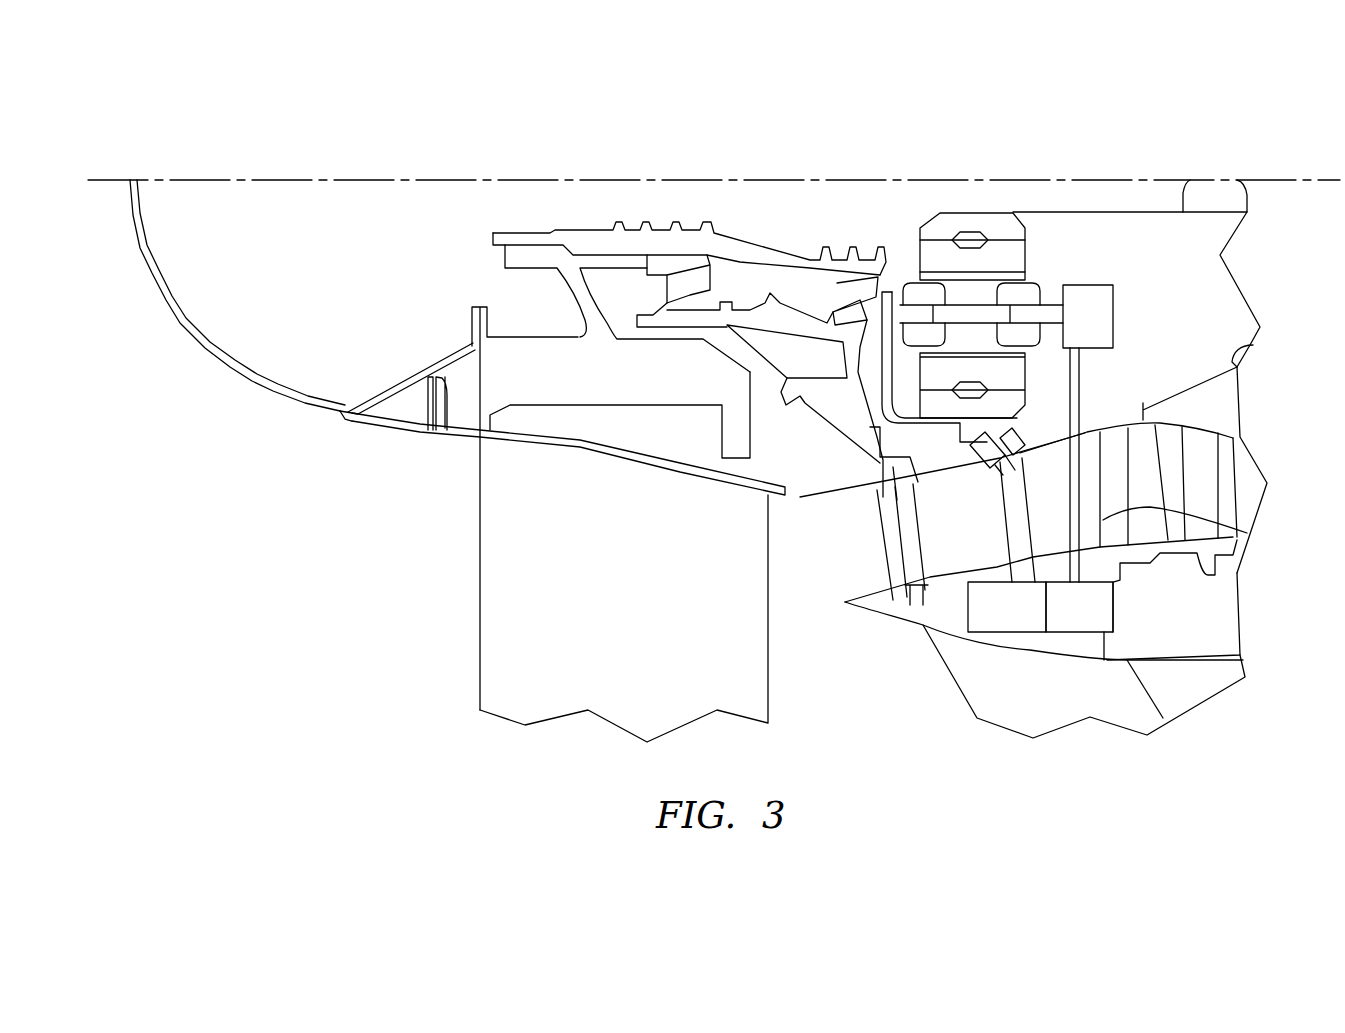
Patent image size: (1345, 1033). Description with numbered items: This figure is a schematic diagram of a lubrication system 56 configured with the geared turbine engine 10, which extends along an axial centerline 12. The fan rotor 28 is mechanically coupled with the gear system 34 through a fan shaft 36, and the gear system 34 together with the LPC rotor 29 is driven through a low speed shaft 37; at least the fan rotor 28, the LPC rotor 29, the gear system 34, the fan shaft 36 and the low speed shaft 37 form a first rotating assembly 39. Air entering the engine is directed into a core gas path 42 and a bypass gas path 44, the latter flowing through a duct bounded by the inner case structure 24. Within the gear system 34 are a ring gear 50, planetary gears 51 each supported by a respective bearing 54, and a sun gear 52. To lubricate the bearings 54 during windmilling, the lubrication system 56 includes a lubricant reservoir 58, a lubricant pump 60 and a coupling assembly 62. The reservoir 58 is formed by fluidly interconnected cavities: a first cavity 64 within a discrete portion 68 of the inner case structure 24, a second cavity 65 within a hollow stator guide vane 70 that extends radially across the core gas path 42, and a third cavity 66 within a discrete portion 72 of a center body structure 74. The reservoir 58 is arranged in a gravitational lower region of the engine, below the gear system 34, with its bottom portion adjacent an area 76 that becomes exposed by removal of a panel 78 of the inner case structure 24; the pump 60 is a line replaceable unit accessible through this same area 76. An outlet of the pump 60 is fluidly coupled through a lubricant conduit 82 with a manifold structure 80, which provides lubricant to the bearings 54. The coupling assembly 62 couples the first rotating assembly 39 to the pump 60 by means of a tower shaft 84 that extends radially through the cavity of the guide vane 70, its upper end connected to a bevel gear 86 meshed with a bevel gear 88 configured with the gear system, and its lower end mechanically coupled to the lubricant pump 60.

The turbine engine 10 is at (421, 119).
The axial centerline 12 is at (107, 178).
The inner case structure 24 is at (1216, 668).
The fan rotor 28 is at (490, 392).
The LPC rotor 29 is at (1253, 347).
The gear system 34 is at (1010, 201).
The fan shaft 36 is at (755, 231).
The low speed shaft 37 is at (1183, 207).
The first rotating assembly 39 is at (1060, 185).
The core gas path 42 is at (1258, 495).
The bypass gas path 44 is at (918, 706).
The ring gear 50 is at (937, 227).
The planetary gears 51 is at (1010, 257).
The sun gear 52 is at (935, 397).
The bearing 54 is at (955, 287).
The lubrication system 56 is at (1125, 376).
The lubricant reservoir 58 is at (938, 612).
The lubricant pump 60 is at (1094, 614).
The coupling assembly 62 is at (1030, 646).
The first cavity 64 is at (1073, 643).
The second cavity 65 is at (960, 560).
The third cavity 66 is at (935, 470).
The discrete portion of the inner case structure 68 is at (1107, 643).
The hollow stator guide vane 70 is at (1247, 533).
The discrete portion of the center body structure 72 is at (1143, 412).
The center body structure 74 is at (1220, 266).
The area 76 is at (1181, 627).
The panel 78 is at (1170, 660).
The manifold structure 80 is at (1102, 327).
The lubricant conduit 82 is at (1080, 370).
The tower shaft 84 is at (1007, 545).
The bevel gear 86 is at (1017, 455).
The bevel gear 88 is at (975, 458).